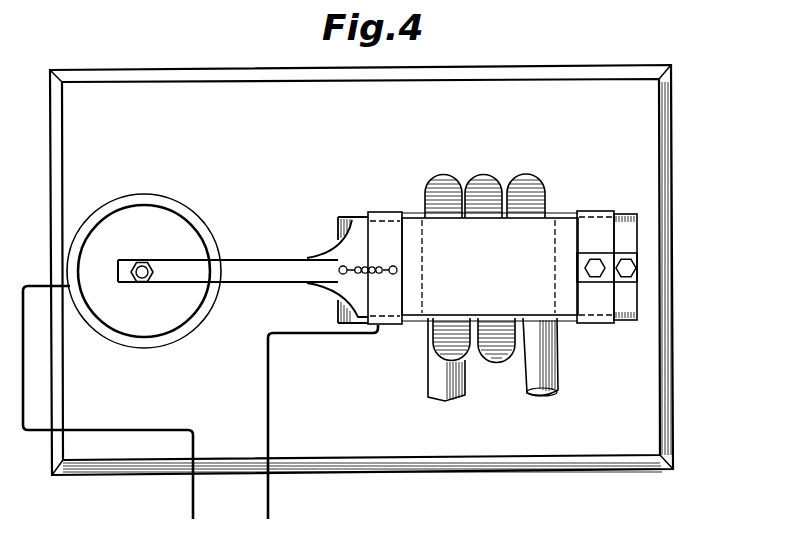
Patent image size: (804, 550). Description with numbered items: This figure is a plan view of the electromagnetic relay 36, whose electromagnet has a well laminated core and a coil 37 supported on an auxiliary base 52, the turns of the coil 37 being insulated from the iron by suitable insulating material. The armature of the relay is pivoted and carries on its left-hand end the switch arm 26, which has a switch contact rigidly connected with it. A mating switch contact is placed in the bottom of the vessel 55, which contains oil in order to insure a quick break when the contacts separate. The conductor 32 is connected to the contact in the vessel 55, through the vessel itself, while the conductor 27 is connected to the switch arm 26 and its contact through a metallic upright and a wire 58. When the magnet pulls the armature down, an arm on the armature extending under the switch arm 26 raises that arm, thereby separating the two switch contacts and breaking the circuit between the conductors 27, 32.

The auxiliary base 52 is at (550, 443).
The vessel 55 is at (207, 242).
The switch arm 26 is at (263, 270).
The electromagnetic relay 36 is at (343, 216).
The wire 58 is at (378, 266).
The coil 37 is at (530, 182).
The conductor 27 is at (269, 400).
The conductor 32 is at (170, 430).